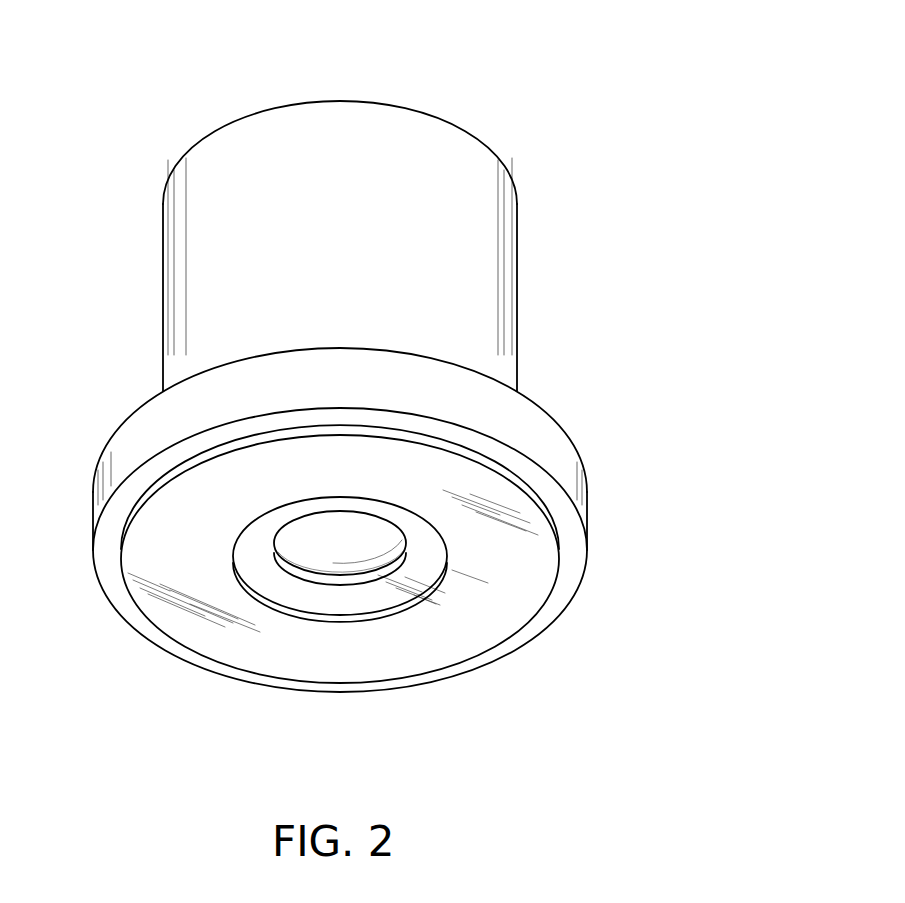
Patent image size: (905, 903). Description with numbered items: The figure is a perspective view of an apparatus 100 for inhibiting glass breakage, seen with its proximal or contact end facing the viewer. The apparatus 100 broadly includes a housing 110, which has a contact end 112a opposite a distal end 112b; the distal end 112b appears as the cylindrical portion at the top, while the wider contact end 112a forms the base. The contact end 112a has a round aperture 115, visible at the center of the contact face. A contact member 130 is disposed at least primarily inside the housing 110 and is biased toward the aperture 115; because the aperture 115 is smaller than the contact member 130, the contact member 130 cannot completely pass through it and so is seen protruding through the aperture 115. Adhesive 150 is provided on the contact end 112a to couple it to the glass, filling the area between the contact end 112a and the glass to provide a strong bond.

The apparatus for inhibiting glass breakage 100 is at (504, 68).
The housing 110 is at (544, 242).
The contact end 112a is at (561, 661).
The distal end 112b is at (163, 145).
The aperture 115 is at (407, 547).
The contact member 130 is at (322, 550).
The adhesive 150 is at (203, 637).